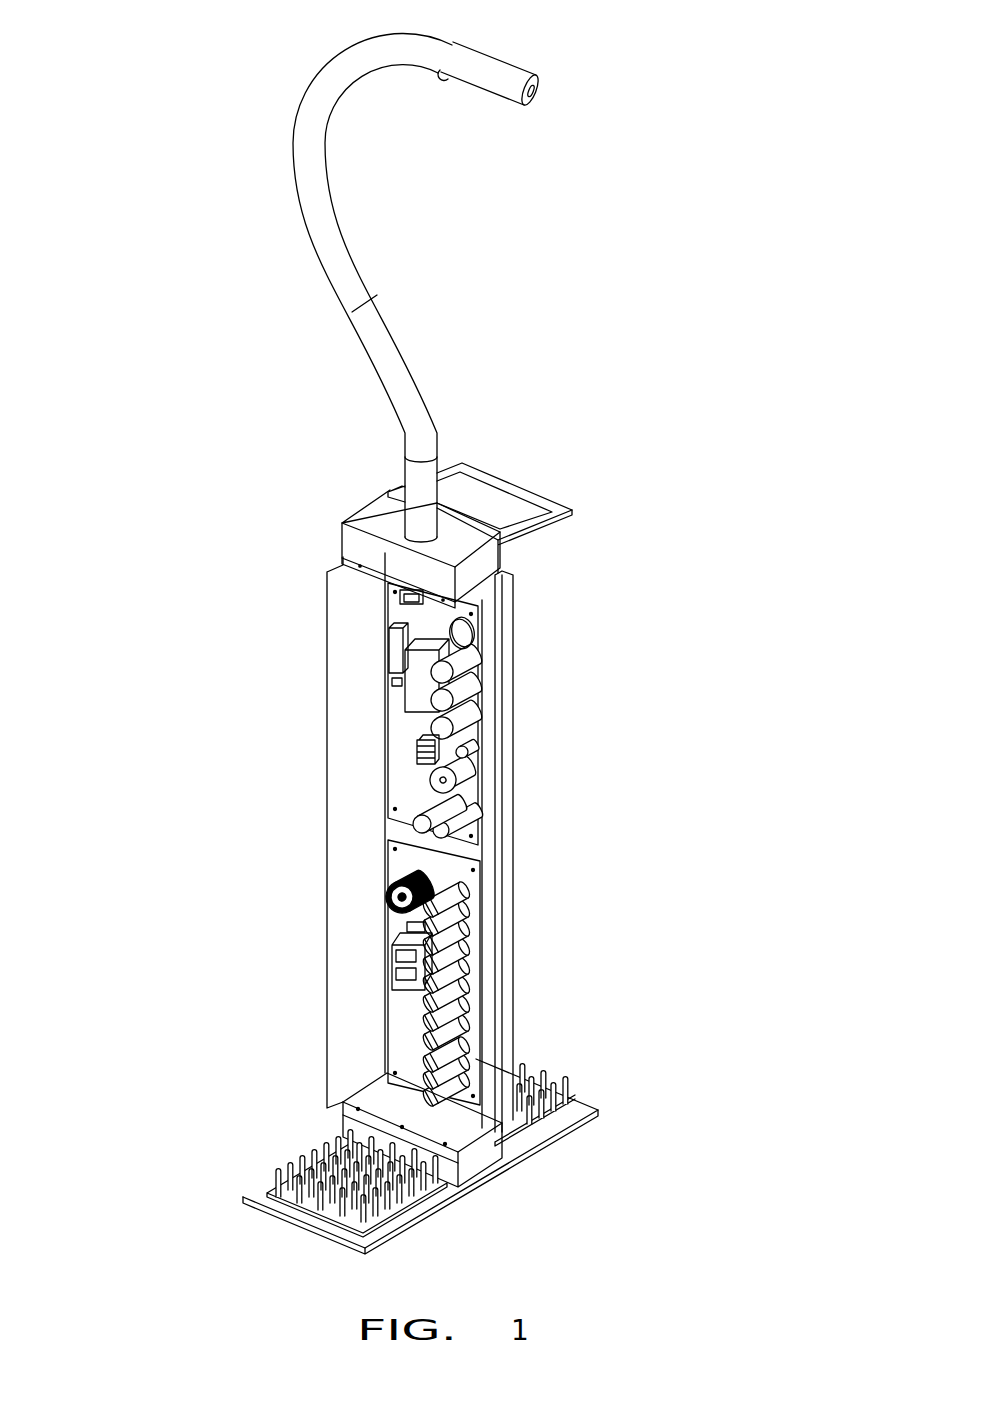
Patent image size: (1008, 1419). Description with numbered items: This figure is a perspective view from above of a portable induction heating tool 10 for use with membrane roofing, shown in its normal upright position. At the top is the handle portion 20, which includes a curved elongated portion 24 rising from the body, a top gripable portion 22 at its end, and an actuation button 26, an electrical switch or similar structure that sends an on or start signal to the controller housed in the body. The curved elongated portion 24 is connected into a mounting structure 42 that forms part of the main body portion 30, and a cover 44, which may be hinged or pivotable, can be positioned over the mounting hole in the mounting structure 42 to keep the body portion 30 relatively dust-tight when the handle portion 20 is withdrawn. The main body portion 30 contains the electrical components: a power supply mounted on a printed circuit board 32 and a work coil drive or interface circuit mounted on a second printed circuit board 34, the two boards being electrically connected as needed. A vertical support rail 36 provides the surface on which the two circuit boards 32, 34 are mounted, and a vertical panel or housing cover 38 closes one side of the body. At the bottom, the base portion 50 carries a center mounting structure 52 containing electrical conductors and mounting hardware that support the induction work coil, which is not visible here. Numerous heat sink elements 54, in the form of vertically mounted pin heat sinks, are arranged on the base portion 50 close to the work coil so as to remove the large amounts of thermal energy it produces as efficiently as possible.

The induction heating tool 10 is at (726, 224).
The handle portion 20 is at (263, 94).
The top gripable portion 22 is at (503, 62).
The curved elongated portion 24 is at (412, 342).
The actuation button 26 is at (444, 80).
The main body portion 30 is at (231, 662).
The printed circuit board 32 is at (476, 644).
The printed circuit board 34 is at (473, 877).
The vertical support rail 36 is at (507, 758).
The housing cover 38 is at (375, 772).
The mounting structure 42 is at (362, 510).
The cover 44 is at (493, 495).
The base portion 50 is at (256, 1122).
The center mounting structure 52 is at (477, 1160).
The heat sink elements 54 is at (272, 1168).